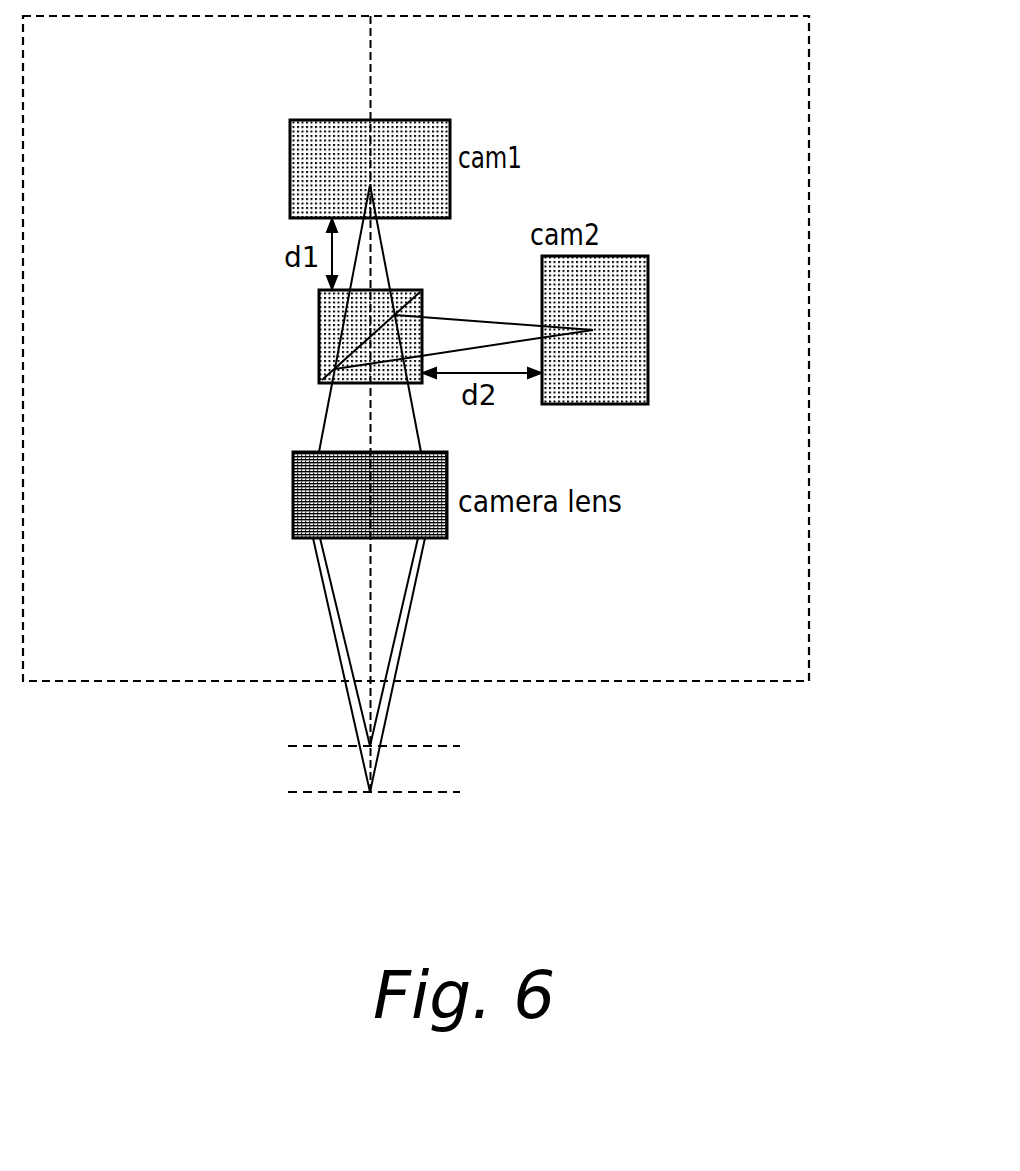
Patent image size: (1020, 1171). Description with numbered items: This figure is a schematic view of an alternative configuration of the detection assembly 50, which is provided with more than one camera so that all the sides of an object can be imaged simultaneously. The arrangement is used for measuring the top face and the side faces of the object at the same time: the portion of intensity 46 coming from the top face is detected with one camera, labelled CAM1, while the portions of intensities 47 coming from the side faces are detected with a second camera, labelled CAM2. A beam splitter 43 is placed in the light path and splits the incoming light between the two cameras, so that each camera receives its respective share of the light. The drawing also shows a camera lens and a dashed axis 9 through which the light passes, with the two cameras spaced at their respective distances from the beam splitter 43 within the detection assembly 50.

The optical axis 9 is at (371, 64).
The beam splitter 43 is at (318, 310).
The portion of intensity coming from the top face 46 is at (422, 746).
The portions of intensities coming from the side faces 47 is at (405, 793).
The detection assembly 50 is at (809, 246).